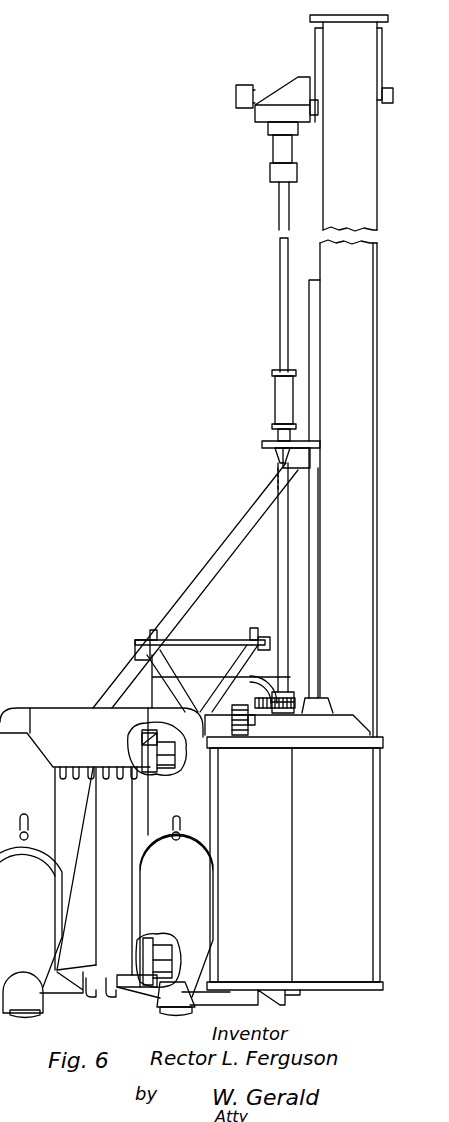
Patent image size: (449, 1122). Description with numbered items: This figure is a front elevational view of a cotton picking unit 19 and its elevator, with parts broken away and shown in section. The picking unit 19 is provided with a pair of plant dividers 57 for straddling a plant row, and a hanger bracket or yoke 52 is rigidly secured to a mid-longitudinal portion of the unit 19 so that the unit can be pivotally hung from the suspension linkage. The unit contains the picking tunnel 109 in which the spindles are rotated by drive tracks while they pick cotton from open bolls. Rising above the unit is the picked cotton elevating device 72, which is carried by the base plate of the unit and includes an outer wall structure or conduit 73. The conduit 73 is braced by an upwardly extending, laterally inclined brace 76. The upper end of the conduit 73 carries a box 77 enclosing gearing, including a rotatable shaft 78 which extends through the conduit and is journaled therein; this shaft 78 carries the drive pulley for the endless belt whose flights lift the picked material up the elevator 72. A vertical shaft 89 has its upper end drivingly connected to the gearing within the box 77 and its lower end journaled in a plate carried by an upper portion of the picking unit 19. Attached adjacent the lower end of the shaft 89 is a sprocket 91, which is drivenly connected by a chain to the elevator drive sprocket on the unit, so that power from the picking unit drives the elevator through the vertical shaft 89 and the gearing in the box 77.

The picking unit 19 is at (270, 866).
The hanger bracket or yoke 52 is at (244, 672).
The plant dividers 57 is at (157, 1007).
The picked cotton elevating device 72 is at (356, 512).
The outer wall structure or conduit 73 is at (322, 263).
The upwardly extending laterally inclined brace 76 is at (212, 558).
The box 77 is at (295, 82).
The rotatable shaft 78 is at (385, 103).
The vertical shaft 89 is at (280, 320).
The sprocket 91 is at (293, 702).
The picking tunnel 109 is at (115, 827).